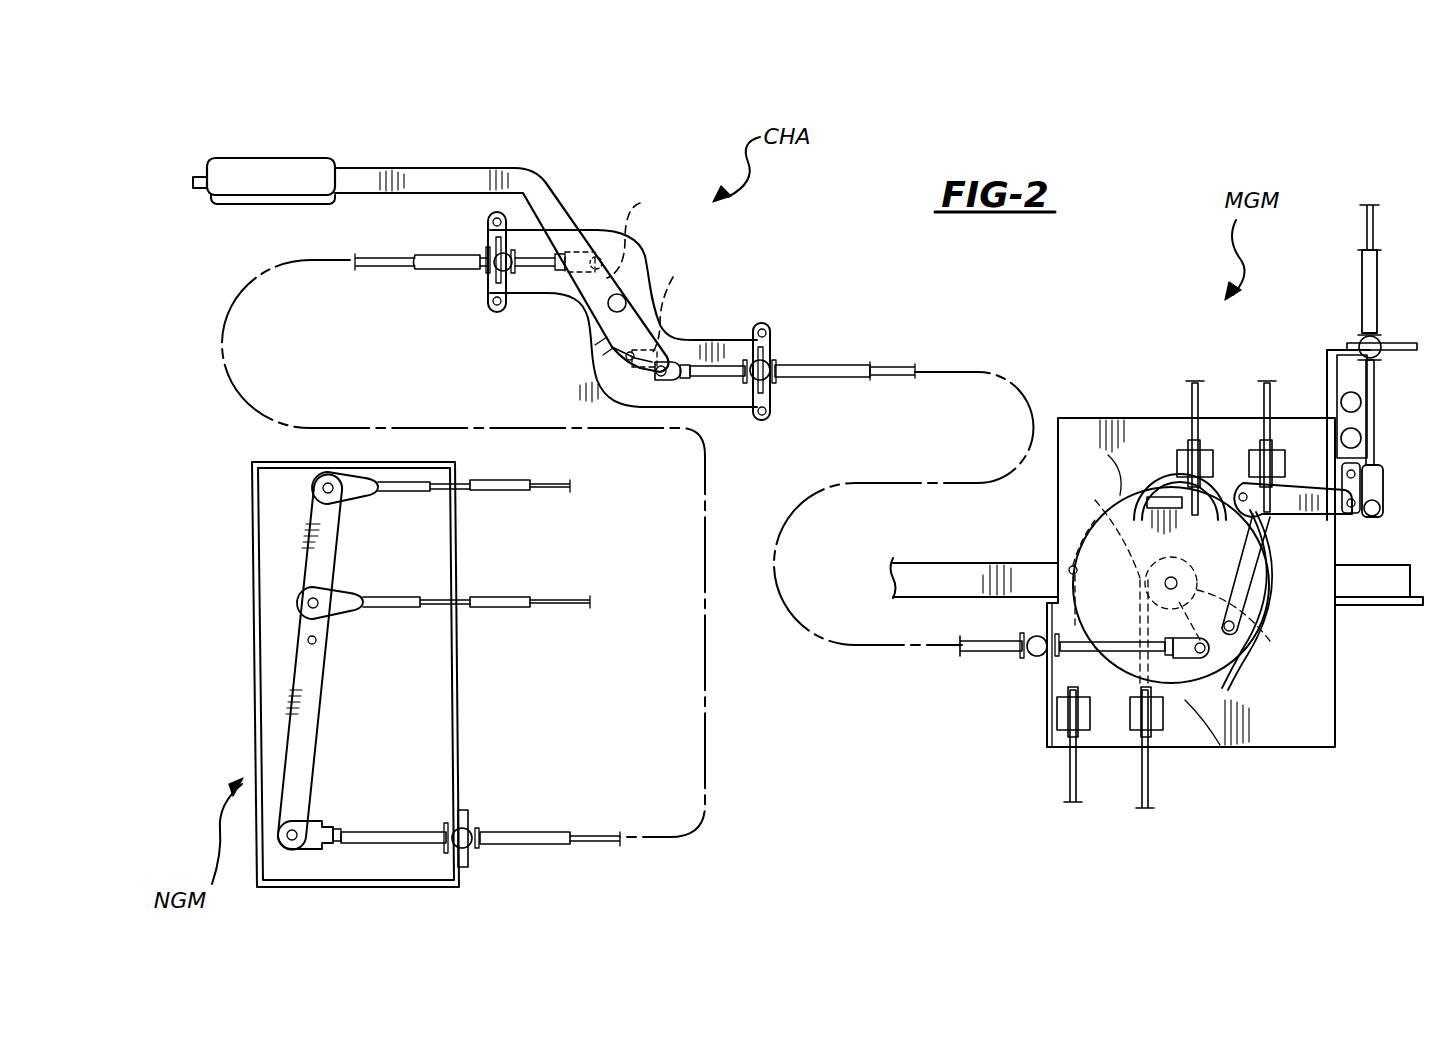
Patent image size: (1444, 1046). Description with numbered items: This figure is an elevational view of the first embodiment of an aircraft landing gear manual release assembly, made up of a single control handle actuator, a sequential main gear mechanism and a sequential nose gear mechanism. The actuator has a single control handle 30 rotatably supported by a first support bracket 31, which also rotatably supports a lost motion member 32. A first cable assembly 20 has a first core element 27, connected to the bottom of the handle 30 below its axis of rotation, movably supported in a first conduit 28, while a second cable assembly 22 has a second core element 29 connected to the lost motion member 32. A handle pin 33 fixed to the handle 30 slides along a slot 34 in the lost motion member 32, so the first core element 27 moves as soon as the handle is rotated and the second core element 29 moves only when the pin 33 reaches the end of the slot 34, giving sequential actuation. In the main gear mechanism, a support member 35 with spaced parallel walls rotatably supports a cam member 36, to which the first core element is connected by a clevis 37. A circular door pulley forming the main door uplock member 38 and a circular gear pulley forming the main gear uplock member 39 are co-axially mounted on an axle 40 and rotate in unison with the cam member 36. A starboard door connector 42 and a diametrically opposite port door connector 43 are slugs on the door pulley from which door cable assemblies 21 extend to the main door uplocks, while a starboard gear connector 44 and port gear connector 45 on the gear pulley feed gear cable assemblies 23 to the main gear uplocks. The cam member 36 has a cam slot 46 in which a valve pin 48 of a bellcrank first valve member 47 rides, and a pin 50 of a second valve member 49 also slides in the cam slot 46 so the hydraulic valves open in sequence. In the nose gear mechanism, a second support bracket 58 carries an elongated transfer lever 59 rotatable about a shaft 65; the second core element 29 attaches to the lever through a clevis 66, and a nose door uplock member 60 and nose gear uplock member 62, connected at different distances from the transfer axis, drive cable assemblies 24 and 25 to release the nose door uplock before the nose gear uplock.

The first cable assembly 20 is at (856, 376).
The cable assemblies 21 is at (1262, 390).
The second cable assembly 22 is at (440, 306).
The cable assemblies 23 is at (1200, 388).
The cable assemblies 24 is at (520, 493).
The cable assemblies 25 is at (517, 609).
The first core element 27 is at (897, 370).
The first conduit 28 is at (818, 370).
The second core element 29 is at (386, 306).
The control handle 30 is at (426, 178).
The first support bracket 31 is at (682, 342).
The lost motion member 32 is at (638, 219).
The handle pin 33 is at (662, 296).
The slot 34 is at (615, 350).
The support member 35 is at (1218, 732).
The rotatable cam member 36 is at (1108, 447).
The clevis 37 is at (1200, 714).
The main door uplock member 38 is at (1067, 527).
The main gear uplock member 39 is at (1172, 653).
The axle 40 is at (1145, 592).
The starboard door connector 42 is at (1293, 534).
The port door connector 43 is at (1073, 560).
The starboard gear connector 44 is at (1268, 643).
The port gear connector 45 is at (1126, 507).
The cam slot 46 is at (1160, 499).
The first valve member 47 is at (1385, 523).
The valve pin 48 is at (1295, 583).
The second valve member 49 is at (1318, 460).
The pin 50 is at (1253, 660).
The second support bracket 58 is at (252, 553).
The transfer member 59 is at (317, 703).
The nose door uplock member 60 is at (330, 478).
The nose gear uplock member 62 is at (360, 608).
The shaft 65 is at (307, 639).
The clevis 66 is at (328, 835).